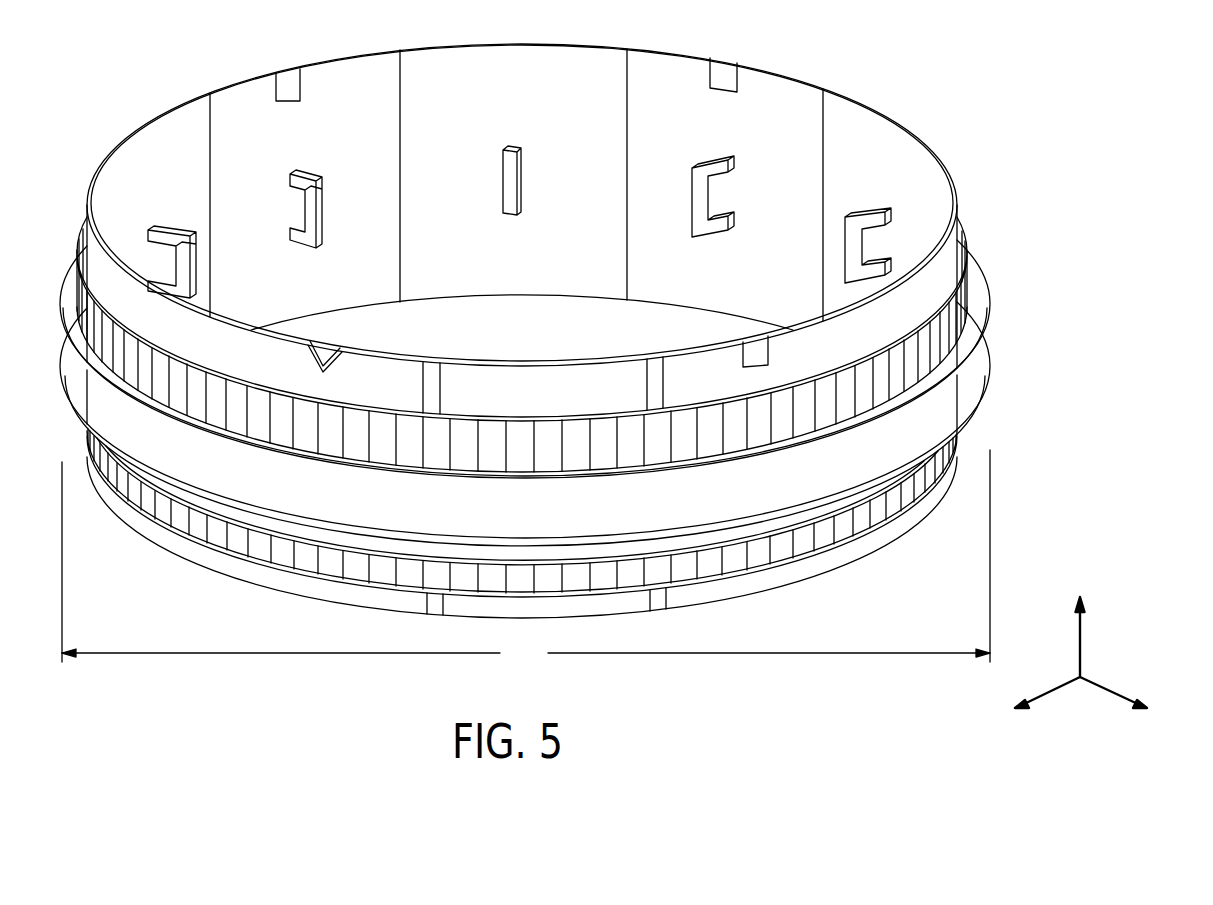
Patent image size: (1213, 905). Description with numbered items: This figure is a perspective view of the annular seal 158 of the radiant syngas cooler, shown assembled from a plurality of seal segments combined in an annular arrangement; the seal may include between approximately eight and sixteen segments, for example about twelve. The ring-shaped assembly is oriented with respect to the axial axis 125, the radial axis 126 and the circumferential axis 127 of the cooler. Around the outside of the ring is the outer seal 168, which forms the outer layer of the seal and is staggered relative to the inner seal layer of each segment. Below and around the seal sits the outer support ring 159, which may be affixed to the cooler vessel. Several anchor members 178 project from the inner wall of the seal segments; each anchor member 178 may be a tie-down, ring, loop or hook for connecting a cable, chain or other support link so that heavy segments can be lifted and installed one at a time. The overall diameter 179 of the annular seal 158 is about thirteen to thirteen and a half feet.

The annular seal 158 is at (971, 65).
The anchor member 178 is at (318, 192).
The outer seal 168 is at (915, 355).
The outer support ring 159 is at (930, 403).
The diameter 179 is at (526, 561).
The axial axis 125 is at (1082, 644).
The radial axis 126 is at (1107, 690).
The circumferential axis 127 is at (1053, 690).